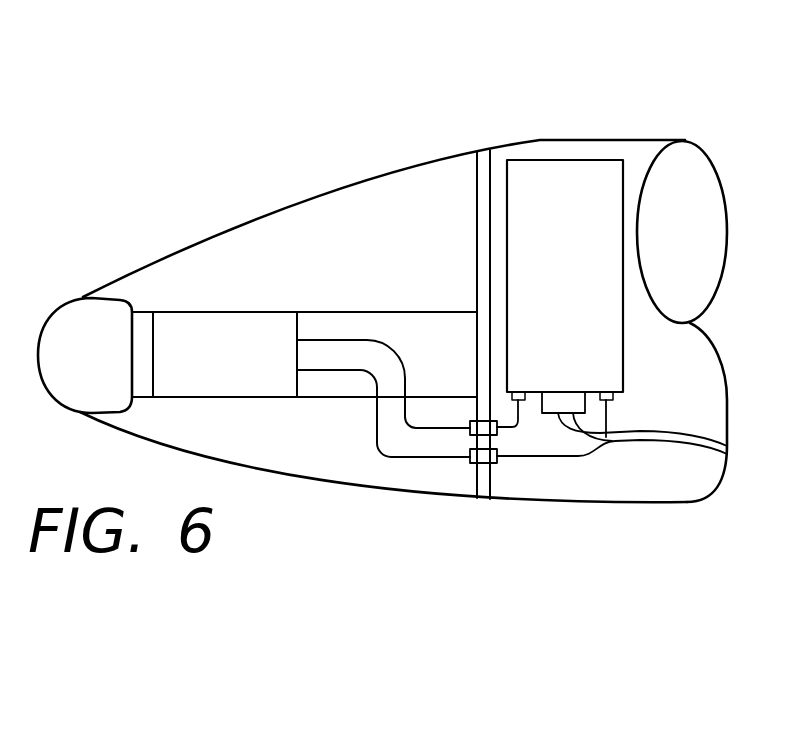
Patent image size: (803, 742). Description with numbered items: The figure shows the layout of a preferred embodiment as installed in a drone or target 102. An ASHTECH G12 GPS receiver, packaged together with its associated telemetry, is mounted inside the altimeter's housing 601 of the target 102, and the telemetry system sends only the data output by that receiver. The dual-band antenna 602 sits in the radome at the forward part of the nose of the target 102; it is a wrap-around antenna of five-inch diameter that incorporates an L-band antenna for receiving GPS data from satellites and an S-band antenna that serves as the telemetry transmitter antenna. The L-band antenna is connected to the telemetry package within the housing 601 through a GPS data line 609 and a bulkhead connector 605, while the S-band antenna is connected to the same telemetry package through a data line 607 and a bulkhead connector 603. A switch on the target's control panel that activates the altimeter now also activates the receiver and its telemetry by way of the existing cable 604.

The target/drone 102 is at (284, 172).
The altimeter housing 601 is at (586, 178).
The dual-band antenna 602 is at (208, 338).
The bulkhead connector 603 is at (498, 433).
The existing cable 604 is at (667, 433).
The bulkhead connector 605 is at (468, 459).
The data line 607 is at (333, 340).
The GPS data line 609 is at (333, 370).